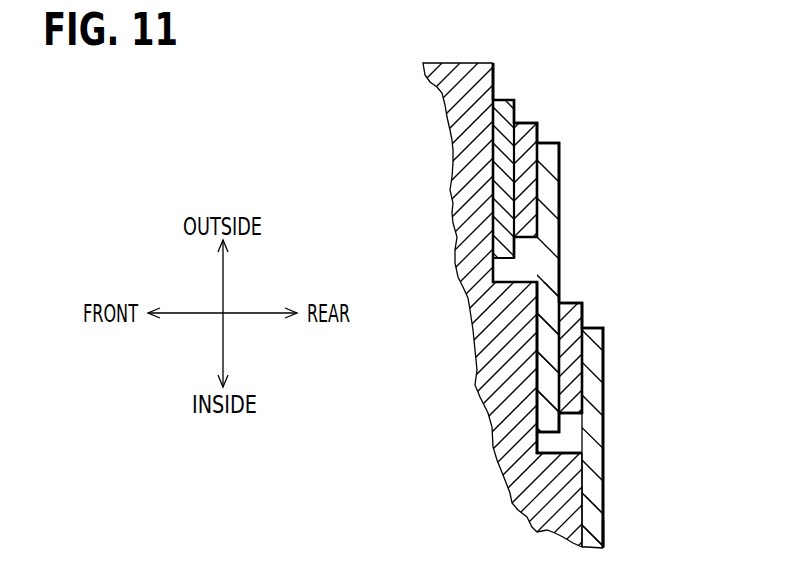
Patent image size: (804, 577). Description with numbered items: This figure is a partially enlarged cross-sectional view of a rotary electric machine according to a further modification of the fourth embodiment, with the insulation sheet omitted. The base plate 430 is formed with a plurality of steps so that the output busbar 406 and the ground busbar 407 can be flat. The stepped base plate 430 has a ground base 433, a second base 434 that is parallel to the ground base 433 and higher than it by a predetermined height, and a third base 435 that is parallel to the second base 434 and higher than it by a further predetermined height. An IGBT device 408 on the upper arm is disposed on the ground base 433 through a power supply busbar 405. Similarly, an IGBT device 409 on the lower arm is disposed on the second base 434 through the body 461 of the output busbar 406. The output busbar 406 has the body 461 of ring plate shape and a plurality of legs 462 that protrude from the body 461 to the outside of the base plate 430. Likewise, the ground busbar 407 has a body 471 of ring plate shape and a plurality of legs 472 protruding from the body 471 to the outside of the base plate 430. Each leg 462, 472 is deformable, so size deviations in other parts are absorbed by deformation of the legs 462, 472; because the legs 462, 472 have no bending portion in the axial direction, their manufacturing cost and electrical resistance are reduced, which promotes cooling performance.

The base plate 430 is at (463, 72).
The ground base 433 is at (497, 80).
The power supply busbar 405 is at (507, 115).
The IGBT device 408 is at (528, 135).
The leg 462 is at (553, 188).
The output busbar 406 is at (569, 241).
The IGBT device 409 is at (580, 313).
The leg 472 is at (600, 370).
The body 461 is at (547, 385).
The second base 434 is at (540, 447).
The ground busbar 407 is at (612, 472).
The third base 435 is at (584, 509).
The body 471 is at (590, 535).